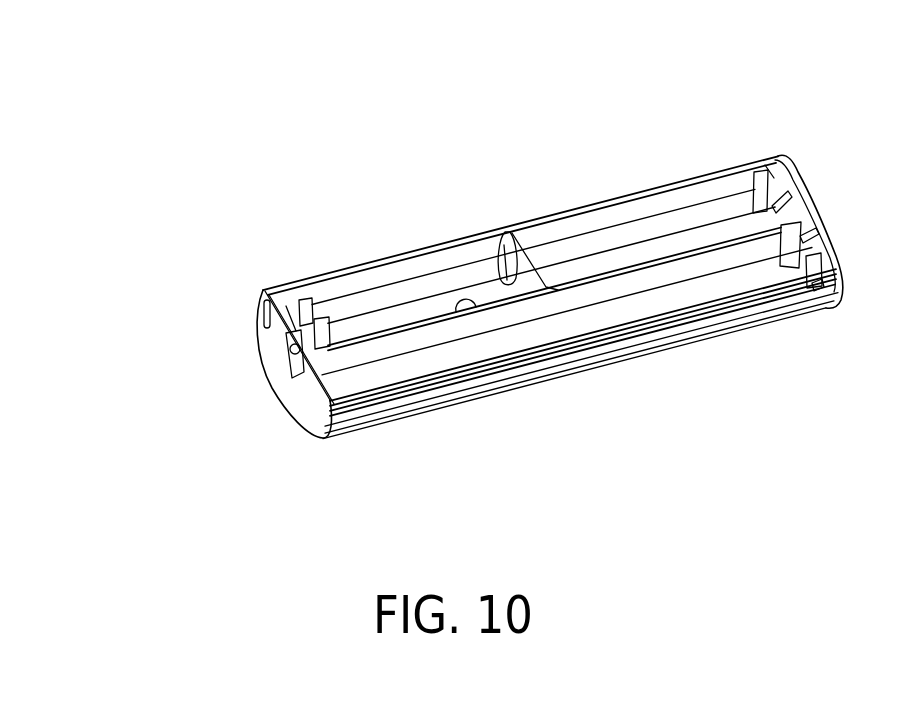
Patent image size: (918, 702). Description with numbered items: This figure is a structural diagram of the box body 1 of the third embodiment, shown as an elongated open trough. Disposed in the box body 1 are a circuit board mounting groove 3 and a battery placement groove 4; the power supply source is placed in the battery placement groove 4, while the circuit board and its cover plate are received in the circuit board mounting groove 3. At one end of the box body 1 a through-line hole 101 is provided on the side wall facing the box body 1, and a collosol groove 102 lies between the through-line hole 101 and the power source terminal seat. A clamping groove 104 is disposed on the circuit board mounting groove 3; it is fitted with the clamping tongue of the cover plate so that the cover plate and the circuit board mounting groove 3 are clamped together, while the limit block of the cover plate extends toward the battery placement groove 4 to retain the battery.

The box body 1 is at (670, 187).
The circuit board mounting groove 3 is at (402, 302).
The battery placement groove 4 is at (715, 233).
The through-line hole 101 is at (258, 330).
The collosol groove 102 is at (261, 291).
The clamping groove 104 is at (508, 228).